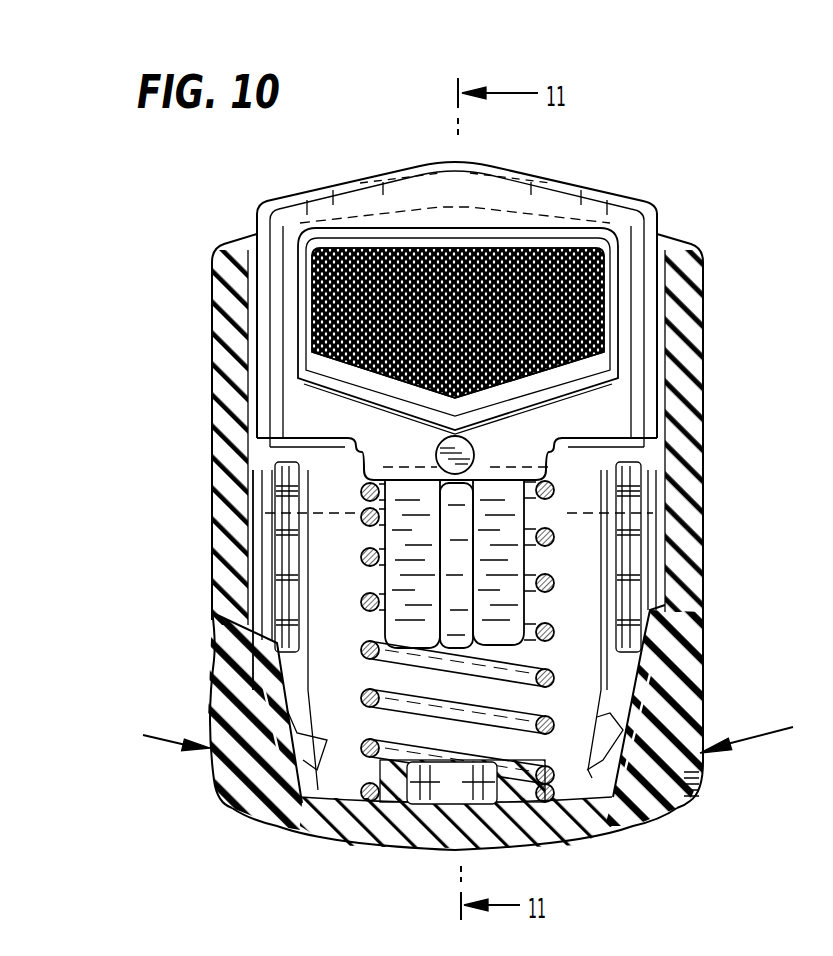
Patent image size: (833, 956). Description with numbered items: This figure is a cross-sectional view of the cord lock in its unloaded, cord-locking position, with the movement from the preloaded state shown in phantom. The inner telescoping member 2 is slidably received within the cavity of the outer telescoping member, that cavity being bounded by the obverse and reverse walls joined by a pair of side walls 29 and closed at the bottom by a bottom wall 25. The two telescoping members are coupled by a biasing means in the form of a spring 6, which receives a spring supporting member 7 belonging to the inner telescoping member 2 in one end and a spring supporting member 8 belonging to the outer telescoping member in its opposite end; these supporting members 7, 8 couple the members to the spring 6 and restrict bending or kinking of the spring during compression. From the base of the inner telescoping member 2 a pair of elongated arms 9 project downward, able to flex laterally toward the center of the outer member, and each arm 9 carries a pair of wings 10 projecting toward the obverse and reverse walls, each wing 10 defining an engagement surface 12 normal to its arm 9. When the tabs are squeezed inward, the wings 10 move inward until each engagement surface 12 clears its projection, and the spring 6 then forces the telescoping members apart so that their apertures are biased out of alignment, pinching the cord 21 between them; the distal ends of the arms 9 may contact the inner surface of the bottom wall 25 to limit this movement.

The inner telescoping member 2 is at (567, 192).
The cord 21 is at (607, 247).
The side walls 29 is at (227, 382).
The bottom wall 25 is at (364, 828).
The engagement surface 12 is at (318, 748).
The arms 9 is at (292, 615).
The wings 10 is at (297, 687).
The spring supporting member 8 is at (518, 764).
The spring supporting member 7 is at (364, 550).
The spring 6 is at (560, 588).